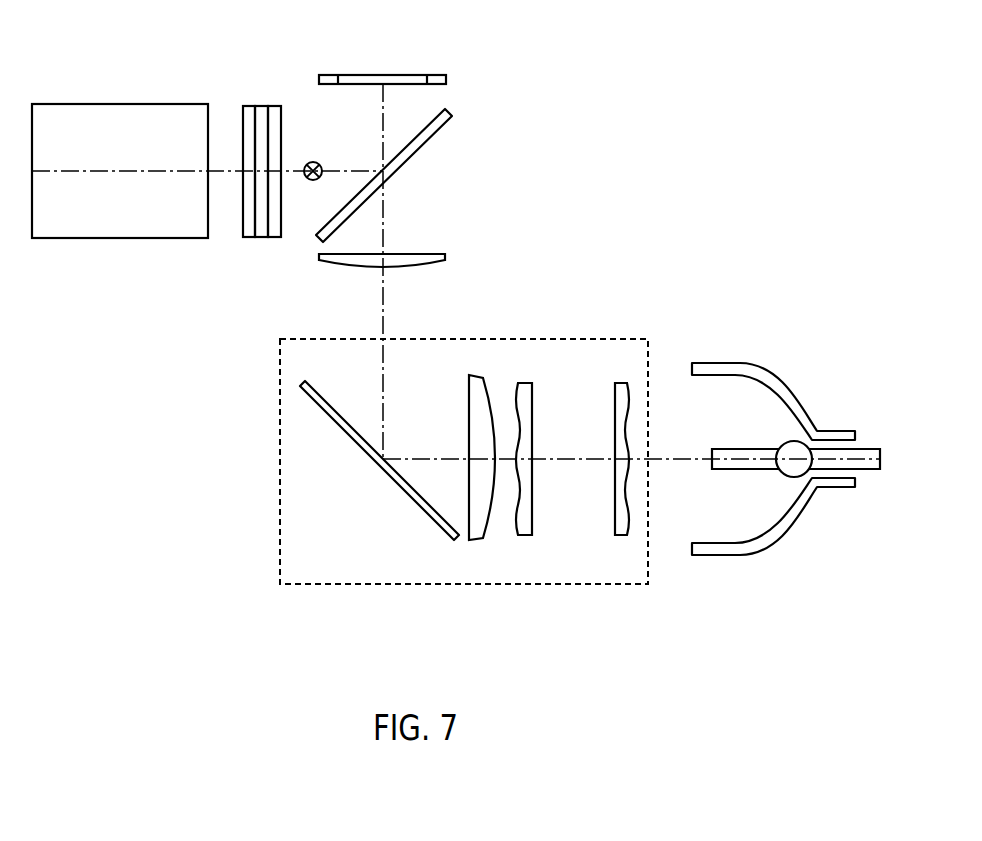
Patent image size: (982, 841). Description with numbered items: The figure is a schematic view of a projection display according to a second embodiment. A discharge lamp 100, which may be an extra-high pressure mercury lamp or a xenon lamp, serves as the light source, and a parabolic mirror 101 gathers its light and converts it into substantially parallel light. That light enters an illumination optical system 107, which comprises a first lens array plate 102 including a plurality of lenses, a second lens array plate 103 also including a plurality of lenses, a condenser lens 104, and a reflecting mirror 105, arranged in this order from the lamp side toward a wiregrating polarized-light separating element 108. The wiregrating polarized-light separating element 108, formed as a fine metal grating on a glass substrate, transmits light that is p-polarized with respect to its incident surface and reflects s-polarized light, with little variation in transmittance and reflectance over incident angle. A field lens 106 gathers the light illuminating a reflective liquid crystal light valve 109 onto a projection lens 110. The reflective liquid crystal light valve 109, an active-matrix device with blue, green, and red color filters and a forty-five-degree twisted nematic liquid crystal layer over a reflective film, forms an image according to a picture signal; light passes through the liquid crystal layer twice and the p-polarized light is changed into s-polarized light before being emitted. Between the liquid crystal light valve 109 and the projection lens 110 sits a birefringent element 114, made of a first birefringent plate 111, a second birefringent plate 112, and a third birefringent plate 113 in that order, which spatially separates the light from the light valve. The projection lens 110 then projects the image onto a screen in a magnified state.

The discharge lamp 100 is at (874, 470).
The parabolic mirror 101 is at (808, 506).
The first lens array plate 102 is at (616, 521).
The second lens array plate 103 is at (532, 521).
The condenser lens 104 is at (467, 392).
The reflecting mirror 105 is at (341, 431).
The field lens 106 is at (340, 264).
The illumination optical system 107 is at (584, 338).
The wiregrating polarized-light separating element 108 is at (429, 142).
The reflective liquid crystal light valve 109 is at (368, 74).
The projection lens 110 is at (121, 103).
The first birefringent plate 111 is at (290, 145).
The second birefringent plate 112 is at (262, 105).
The third birefringent plate 113 is at (249, 105).
The birefringent element 114 is at (261, 123).